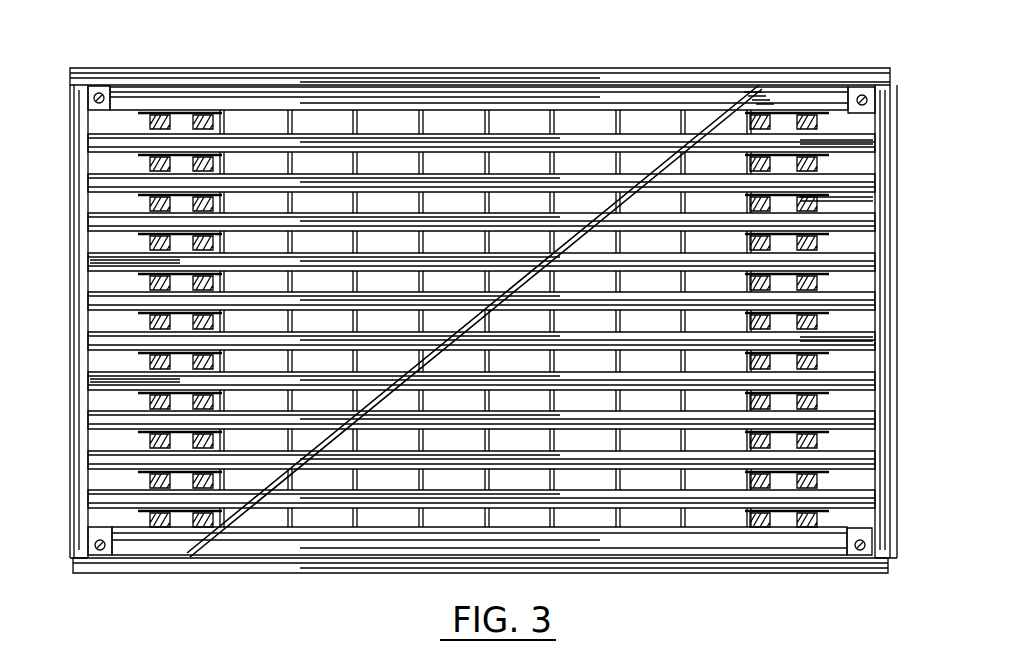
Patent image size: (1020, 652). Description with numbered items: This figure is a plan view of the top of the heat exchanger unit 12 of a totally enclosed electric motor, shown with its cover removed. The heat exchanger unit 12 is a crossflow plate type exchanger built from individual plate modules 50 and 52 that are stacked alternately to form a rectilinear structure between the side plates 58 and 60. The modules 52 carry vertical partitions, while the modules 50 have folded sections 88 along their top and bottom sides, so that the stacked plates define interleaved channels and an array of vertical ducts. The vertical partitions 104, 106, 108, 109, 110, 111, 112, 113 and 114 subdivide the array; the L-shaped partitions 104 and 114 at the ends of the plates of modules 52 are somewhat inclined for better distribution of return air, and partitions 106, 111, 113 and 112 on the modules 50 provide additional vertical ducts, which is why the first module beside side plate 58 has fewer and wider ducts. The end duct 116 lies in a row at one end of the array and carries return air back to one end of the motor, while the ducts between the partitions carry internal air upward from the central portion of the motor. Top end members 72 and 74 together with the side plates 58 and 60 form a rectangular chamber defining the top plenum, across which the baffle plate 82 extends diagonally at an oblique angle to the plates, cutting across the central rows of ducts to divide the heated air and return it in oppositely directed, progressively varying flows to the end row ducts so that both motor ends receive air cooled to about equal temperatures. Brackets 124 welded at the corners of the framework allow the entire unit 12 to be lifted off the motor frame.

The heat exchanger unit 12 is at (485, 322).
The plate module 50 is at (100, 262).
The plate module 52 is at (320, 107).
The side plate 58 is at (732, 565).
The side plate 60 is at (598, 72).
The top end member 72 is at (70, 221).
The top end member 74 is at (895, 232).
The baffle plate 82 is at (737, 110).
The folded section 88 is at (865, 145).
The partition 104 is at (217, 88).
The partition 106 is at (288, 88).
The partition 108 is at (355, 88).
The partition 109 is at (485, 88).
The partition 110 is at (682, 88).
The partition 111 is at (418, 88).
The partition 112 is at (617, 87).
The partition 113 is at (548, 88).
The partition 114 is at (787, 120).
The end duct 116 is at (479, 574).
The bracket 124 is at (100, 90).